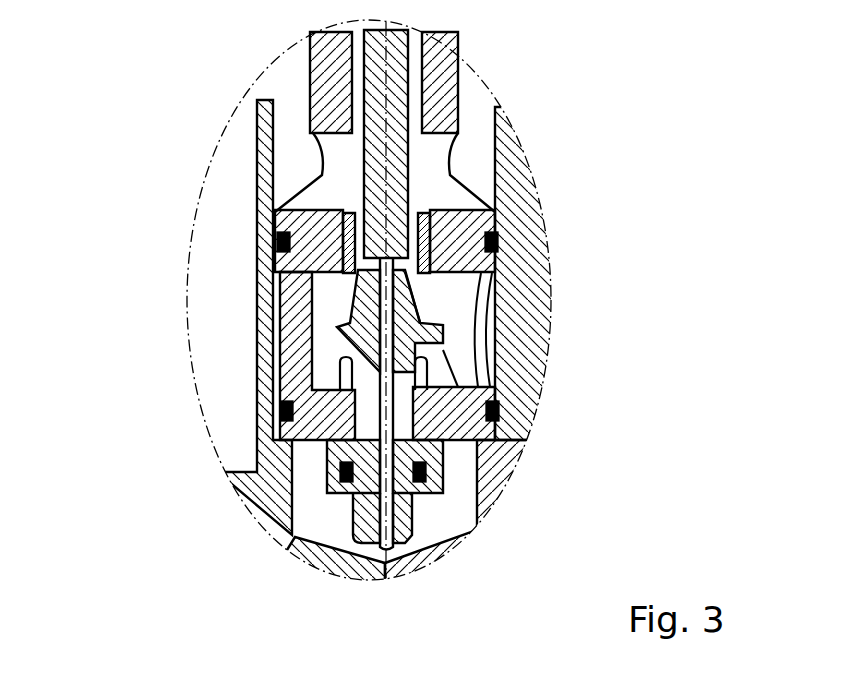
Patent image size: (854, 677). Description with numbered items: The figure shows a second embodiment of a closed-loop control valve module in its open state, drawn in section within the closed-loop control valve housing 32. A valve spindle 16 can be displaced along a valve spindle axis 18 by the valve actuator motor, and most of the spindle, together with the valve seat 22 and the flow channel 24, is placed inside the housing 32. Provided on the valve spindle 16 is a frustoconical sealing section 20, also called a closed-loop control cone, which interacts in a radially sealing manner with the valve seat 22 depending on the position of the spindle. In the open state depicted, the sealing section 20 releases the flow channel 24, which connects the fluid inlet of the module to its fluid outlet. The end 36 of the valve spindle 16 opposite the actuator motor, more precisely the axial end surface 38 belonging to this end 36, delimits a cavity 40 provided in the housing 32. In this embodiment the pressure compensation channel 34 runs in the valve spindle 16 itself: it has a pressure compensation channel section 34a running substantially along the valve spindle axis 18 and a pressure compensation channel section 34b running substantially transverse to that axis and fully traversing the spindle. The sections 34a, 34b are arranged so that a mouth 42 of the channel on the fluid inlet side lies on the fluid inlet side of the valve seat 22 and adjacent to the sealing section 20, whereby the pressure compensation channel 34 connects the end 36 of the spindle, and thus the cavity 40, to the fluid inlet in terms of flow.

The valve spindle 16 is at (392, 192).
The valve spindle axis 18 is at (390, 88).
The frustoconical sealing section 20 is at (350, 316).
The valve seat 22 is at (425, 280).
The flow channel 24 is at (420, 292).
The closed-loop control valve housing 32 is at (263, 492).
The pressure compensation channel 34 is at (245, 397).
The pressure compensation channel section 34a is at (368, 538).
The pressure compensation channel section 34b is at (352, 278).
The end of the valve spindle 36 is at (368, 537).
The axial end surface 38 is at (400, 547).
The cavity 40 is at (452, 500).
The mouth 42 is at (495, 243).